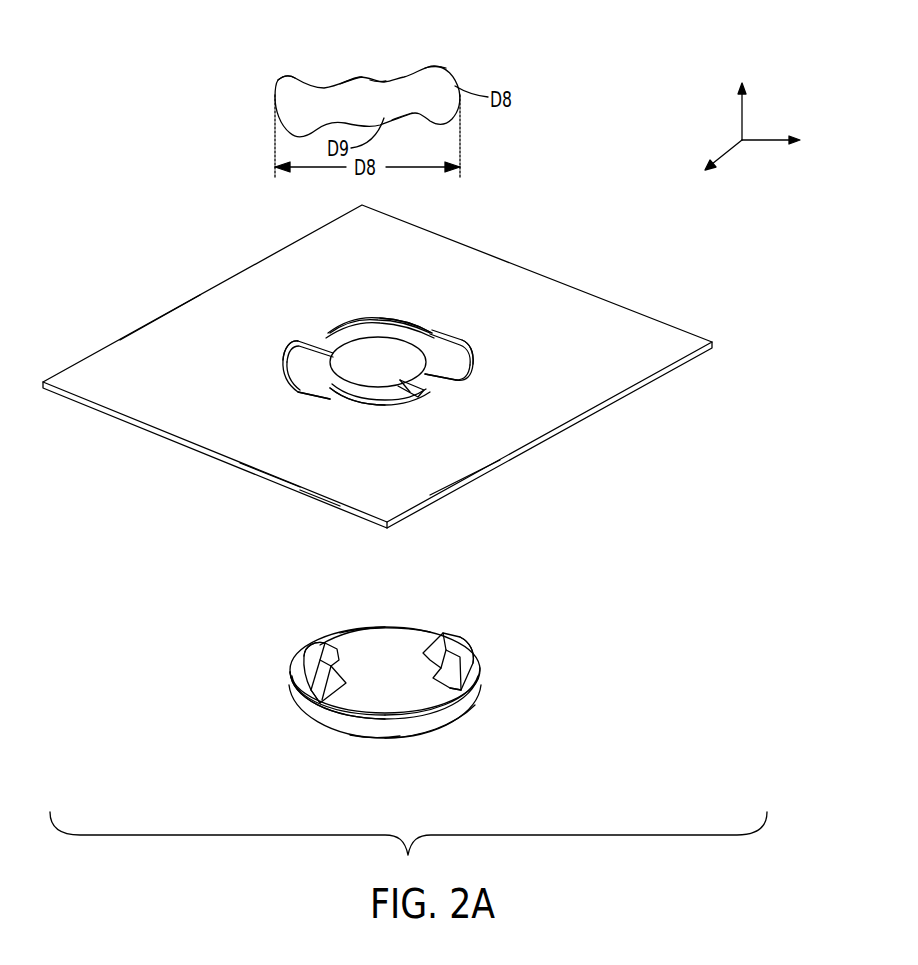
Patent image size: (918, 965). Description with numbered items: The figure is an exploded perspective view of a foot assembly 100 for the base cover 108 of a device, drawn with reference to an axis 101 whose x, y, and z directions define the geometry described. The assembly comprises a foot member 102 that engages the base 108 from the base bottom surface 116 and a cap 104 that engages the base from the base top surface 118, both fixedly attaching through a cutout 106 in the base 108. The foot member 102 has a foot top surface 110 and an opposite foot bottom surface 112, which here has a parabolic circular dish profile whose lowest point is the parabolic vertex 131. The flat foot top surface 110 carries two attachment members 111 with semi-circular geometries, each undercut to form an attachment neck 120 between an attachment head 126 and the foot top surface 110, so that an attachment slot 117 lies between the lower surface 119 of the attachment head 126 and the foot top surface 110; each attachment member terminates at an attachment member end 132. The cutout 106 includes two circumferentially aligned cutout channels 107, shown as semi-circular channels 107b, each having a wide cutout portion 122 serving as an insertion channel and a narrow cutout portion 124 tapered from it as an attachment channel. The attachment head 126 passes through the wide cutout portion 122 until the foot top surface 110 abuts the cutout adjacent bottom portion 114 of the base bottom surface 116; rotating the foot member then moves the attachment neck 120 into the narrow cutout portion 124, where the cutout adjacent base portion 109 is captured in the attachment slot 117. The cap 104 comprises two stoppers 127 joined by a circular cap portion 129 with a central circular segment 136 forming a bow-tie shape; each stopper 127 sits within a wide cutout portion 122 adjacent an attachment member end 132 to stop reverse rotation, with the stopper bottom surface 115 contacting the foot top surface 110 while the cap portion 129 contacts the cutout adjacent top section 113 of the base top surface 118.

The foot assembly 100 is at (606, 126).
The axis 101 is at (746, 122).
The foot member 102 is at (490, 680).
The cap 104 is at (402, 78).
The cutout 106 is at (295, 353).
The cutout channel 107 is at (324, 388).
The cutout channels 107b is at (283, 368).
The base cover 108 is at (650, 329).
The cutout adjacent base portion 109 is at (360, 369).
The foot top surface 110 is at (405, 636).
The attachment member 111 is at (302, 660).
The foot bottom surface 112 is at (400, 735).
The cutout adjacent top section 113 is at (400, 325).
The cutout adjacent bottom portion 114 is at (457, 490).
The bottom surface of the stopper 115 is at (400, 115).
The base bottom surface 116 is at (268, 481).
The attachment slot 117 is at (305, 702).
The base top surface 118 is at (157, 312).
The lower surface of the attachment head 119 is at (362, 630).
The attachment neck 120 is at (330, 715).
The wide cutout portion 122 is at (292, 385).
The narrow cutout portion 124 is at (320, 497).
The attachment head 126 is at (292, 672).
The stopper 127 is at (285, 78).
The cap portion 129 is at (362, 77).
The parabolic vertex 131 is at (377, 743).
The attachment member end 132 is at (318, 645).
The central circular segment 136 is at (374, 83).